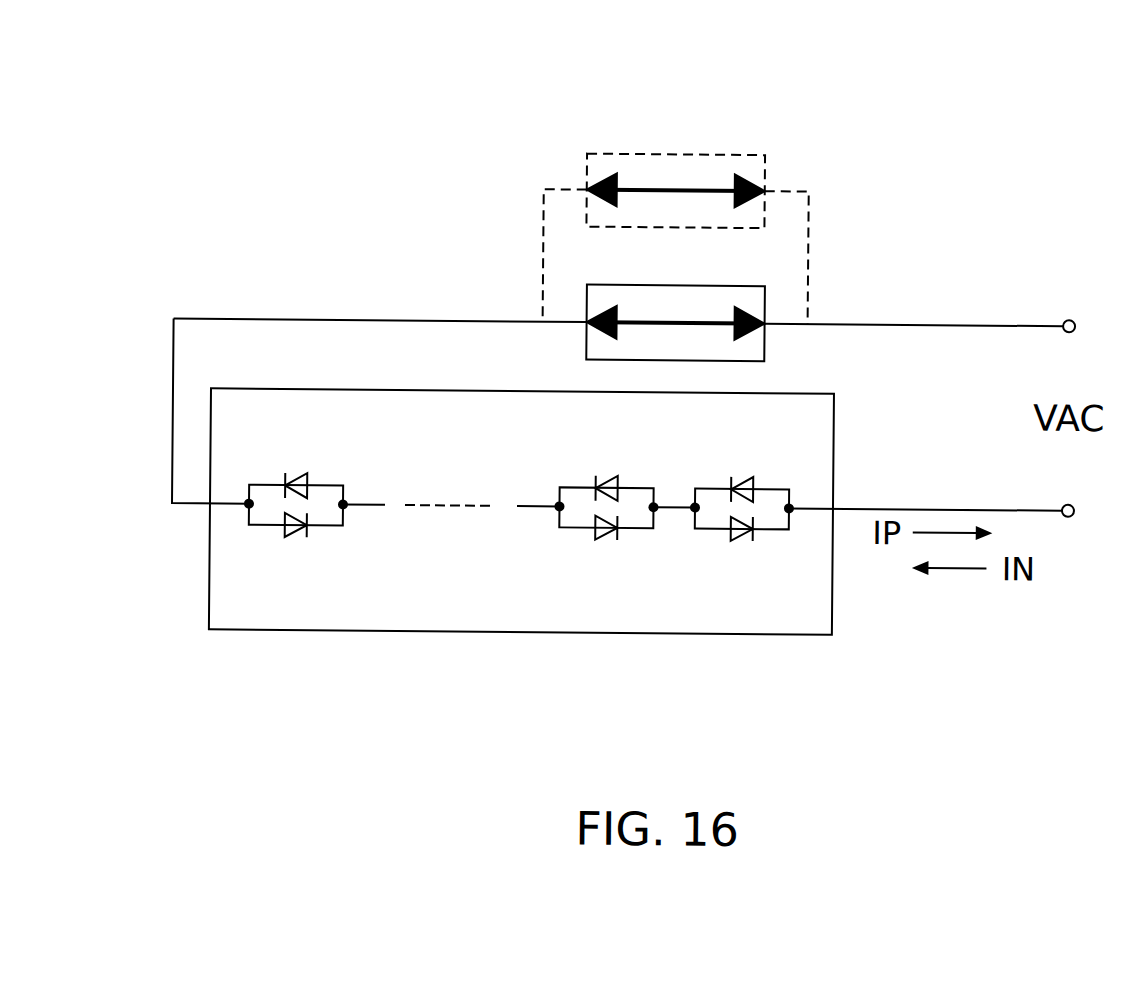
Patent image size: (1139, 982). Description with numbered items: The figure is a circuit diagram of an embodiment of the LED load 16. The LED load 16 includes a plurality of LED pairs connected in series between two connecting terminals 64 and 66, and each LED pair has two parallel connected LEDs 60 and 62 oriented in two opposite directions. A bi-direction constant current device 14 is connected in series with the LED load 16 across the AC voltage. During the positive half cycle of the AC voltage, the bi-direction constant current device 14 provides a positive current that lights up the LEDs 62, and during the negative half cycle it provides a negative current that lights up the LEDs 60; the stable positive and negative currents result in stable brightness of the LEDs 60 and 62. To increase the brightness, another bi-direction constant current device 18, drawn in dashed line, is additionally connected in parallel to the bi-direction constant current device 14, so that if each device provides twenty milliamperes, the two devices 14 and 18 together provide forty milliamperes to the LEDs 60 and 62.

The bi-direction constant current device 14 is at (763, 333).
The bi-direction constant current device 18 is at (671, 150).
The LED load 16 is at (208, 576).
The LED 60 is at (297, 471).
The LED 62 is at (302, 536).
The connecting terminal 64 is at (185, 507).
The connecting terminal 66 is at (857, 503).